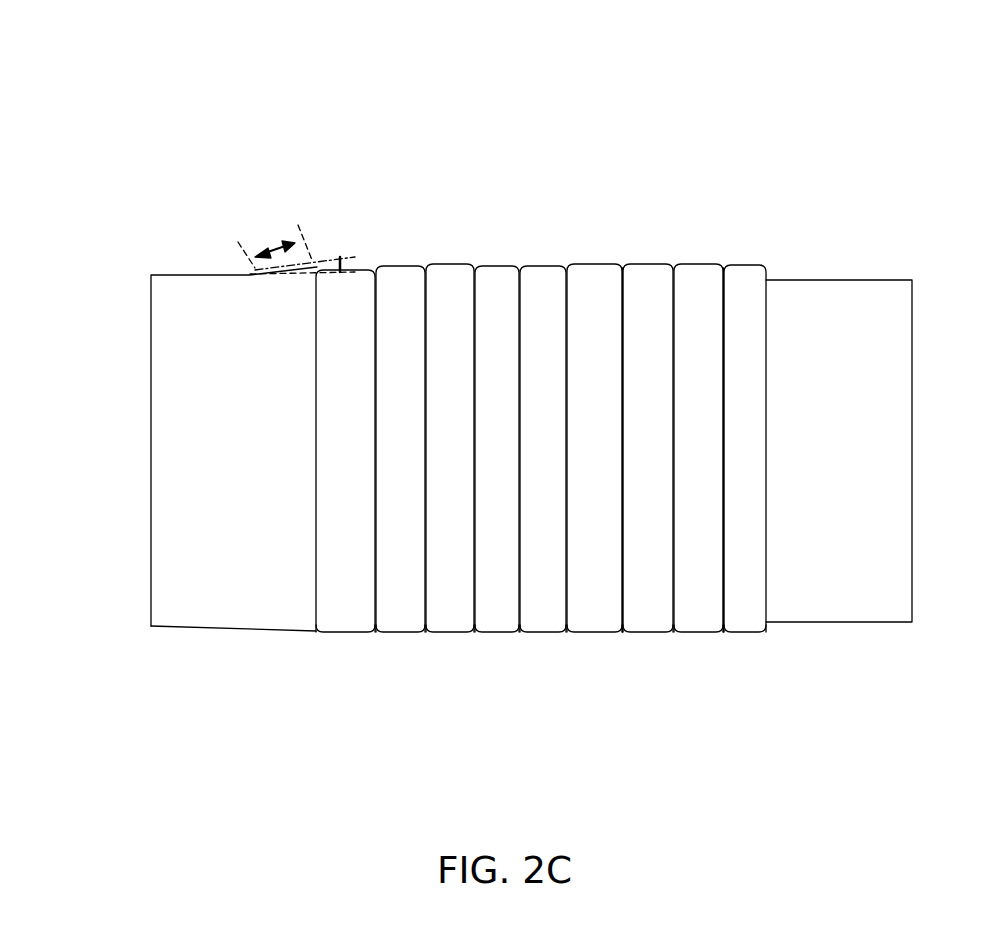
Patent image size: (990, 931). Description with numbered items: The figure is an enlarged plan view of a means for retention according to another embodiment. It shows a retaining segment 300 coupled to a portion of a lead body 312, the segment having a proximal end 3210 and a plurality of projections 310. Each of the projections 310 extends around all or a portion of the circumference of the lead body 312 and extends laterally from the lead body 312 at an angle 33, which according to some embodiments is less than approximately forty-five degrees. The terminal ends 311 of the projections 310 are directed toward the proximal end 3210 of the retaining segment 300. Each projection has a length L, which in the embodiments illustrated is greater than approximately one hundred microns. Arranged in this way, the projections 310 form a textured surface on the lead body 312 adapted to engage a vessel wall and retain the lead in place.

The retaining segment 300 is at (534, 100).
The proximal end 3210 is at (708, 192).
The projections 310 is at (550, 620).
The terminal ends 311 is at (723, 463).
The lead body 312 is at (168, 610).
The angle 33 is at (342, 268).
The length L is at (272, 243).